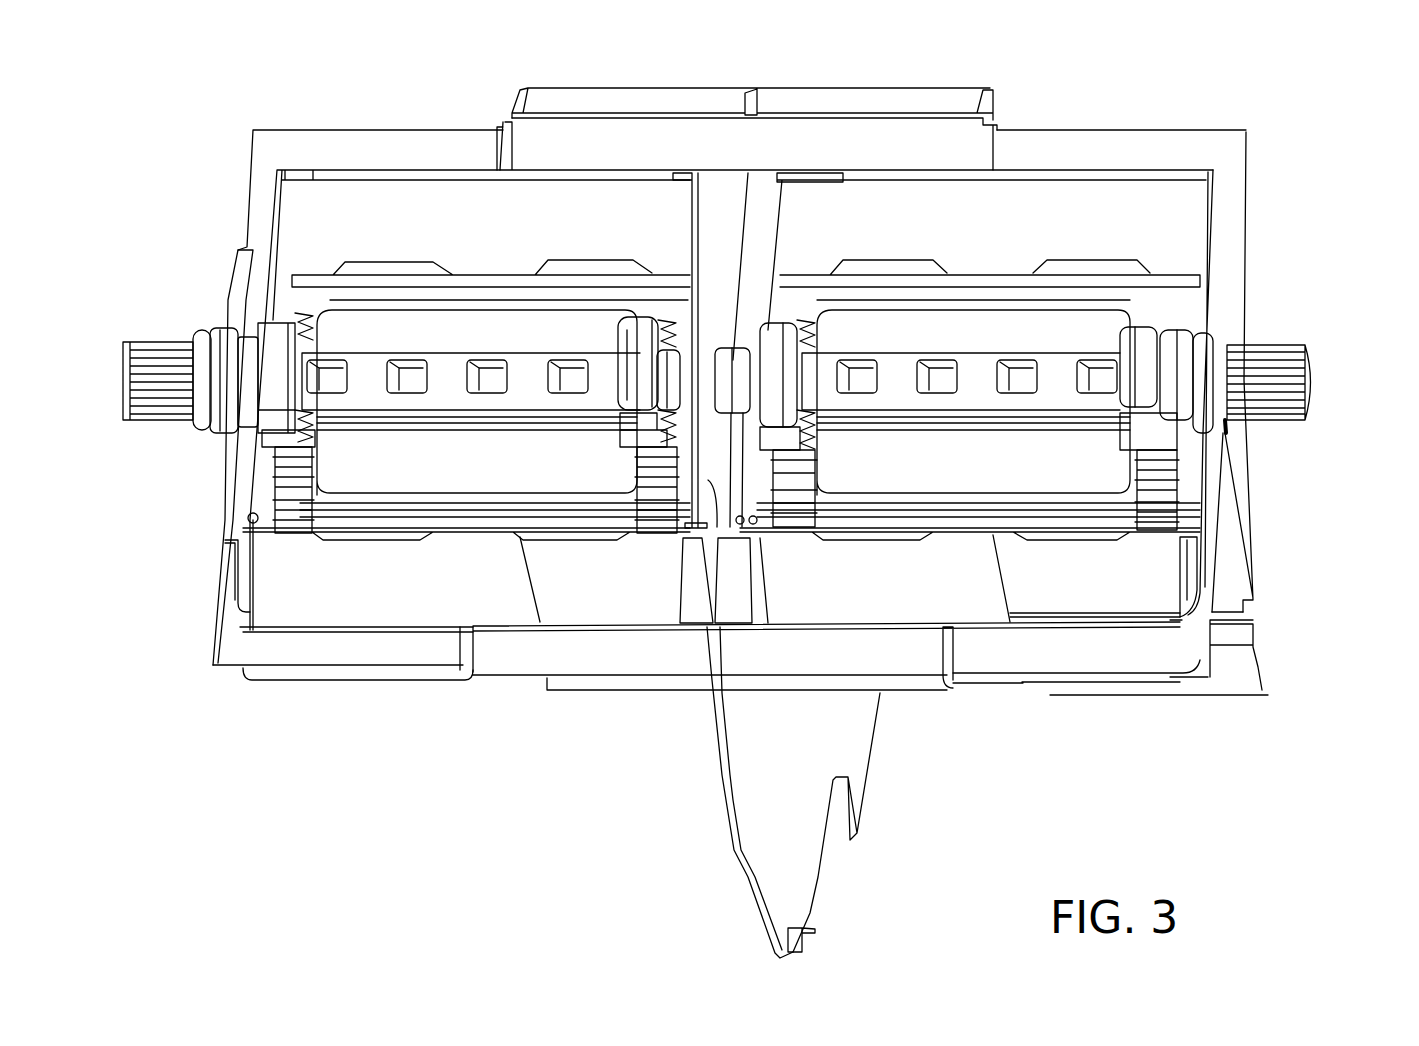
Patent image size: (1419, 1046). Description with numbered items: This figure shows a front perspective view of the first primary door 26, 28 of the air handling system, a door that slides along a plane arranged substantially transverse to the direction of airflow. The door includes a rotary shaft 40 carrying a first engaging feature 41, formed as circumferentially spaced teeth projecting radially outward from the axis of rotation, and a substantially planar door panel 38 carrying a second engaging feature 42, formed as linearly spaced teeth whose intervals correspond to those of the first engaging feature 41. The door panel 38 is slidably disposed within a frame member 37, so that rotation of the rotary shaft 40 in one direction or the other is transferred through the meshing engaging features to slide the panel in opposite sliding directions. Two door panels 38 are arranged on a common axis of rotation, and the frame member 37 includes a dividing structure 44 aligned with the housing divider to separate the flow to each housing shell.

The first primary door 26 is at (801, 367).
The housing cover 28 is at (747, 129).
The frame member 37 is at (618, 653).
The door panel 38 is at (467, 460).
The rotary shaft 40 is at (1063, 390).
The first engaging feature 41 is at (268, 447).
The second engaging feature 42 is at (293, 500).
The dividing structure 44 is at (714, 520).